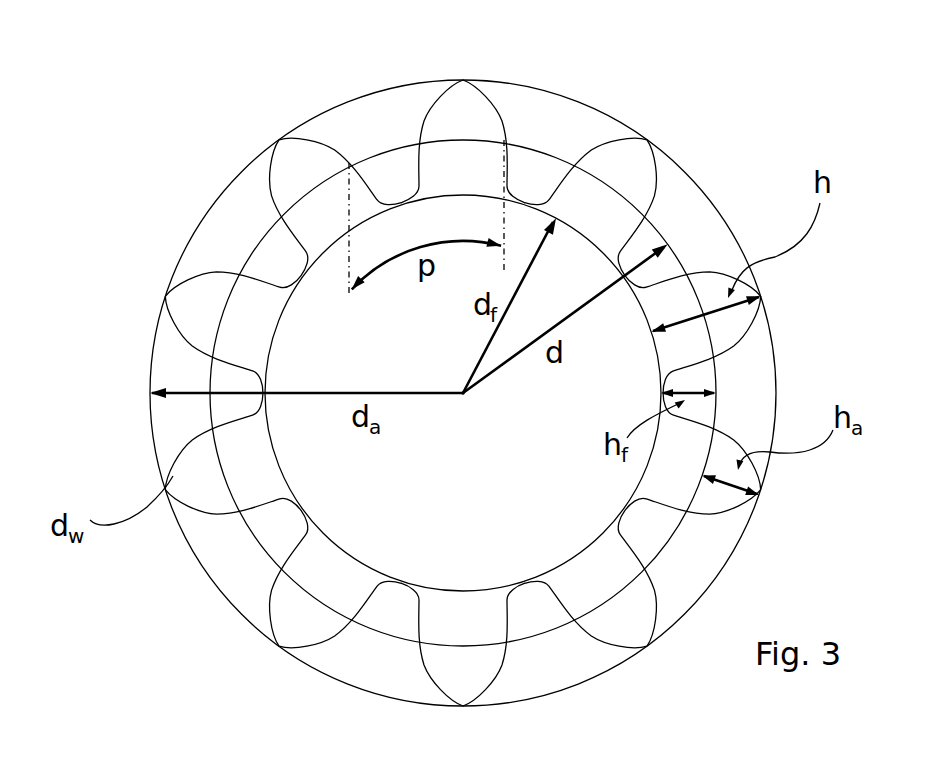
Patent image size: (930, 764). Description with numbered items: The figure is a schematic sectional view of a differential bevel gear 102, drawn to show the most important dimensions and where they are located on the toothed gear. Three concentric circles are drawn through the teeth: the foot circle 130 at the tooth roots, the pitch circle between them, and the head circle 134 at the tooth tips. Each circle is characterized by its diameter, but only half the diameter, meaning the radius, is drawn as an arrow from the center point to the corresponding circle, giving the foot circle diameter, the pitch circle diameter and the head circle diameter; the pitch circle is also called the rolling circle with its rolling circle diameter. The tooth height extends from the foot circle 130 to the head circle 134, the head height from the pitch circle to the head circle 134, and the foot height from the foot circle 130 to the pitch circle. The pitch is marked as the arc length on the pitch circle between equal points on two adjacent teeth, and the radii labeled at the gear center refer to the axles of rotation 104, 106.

The differential bevel gear 102 is at (117, 76).
The foot circle 130 is at (357, 567).
The head circle 134 is at (210, 583).
The axle of rotation 104 is at (462, 394).
The axle of rotation 106 is at (413, 364).